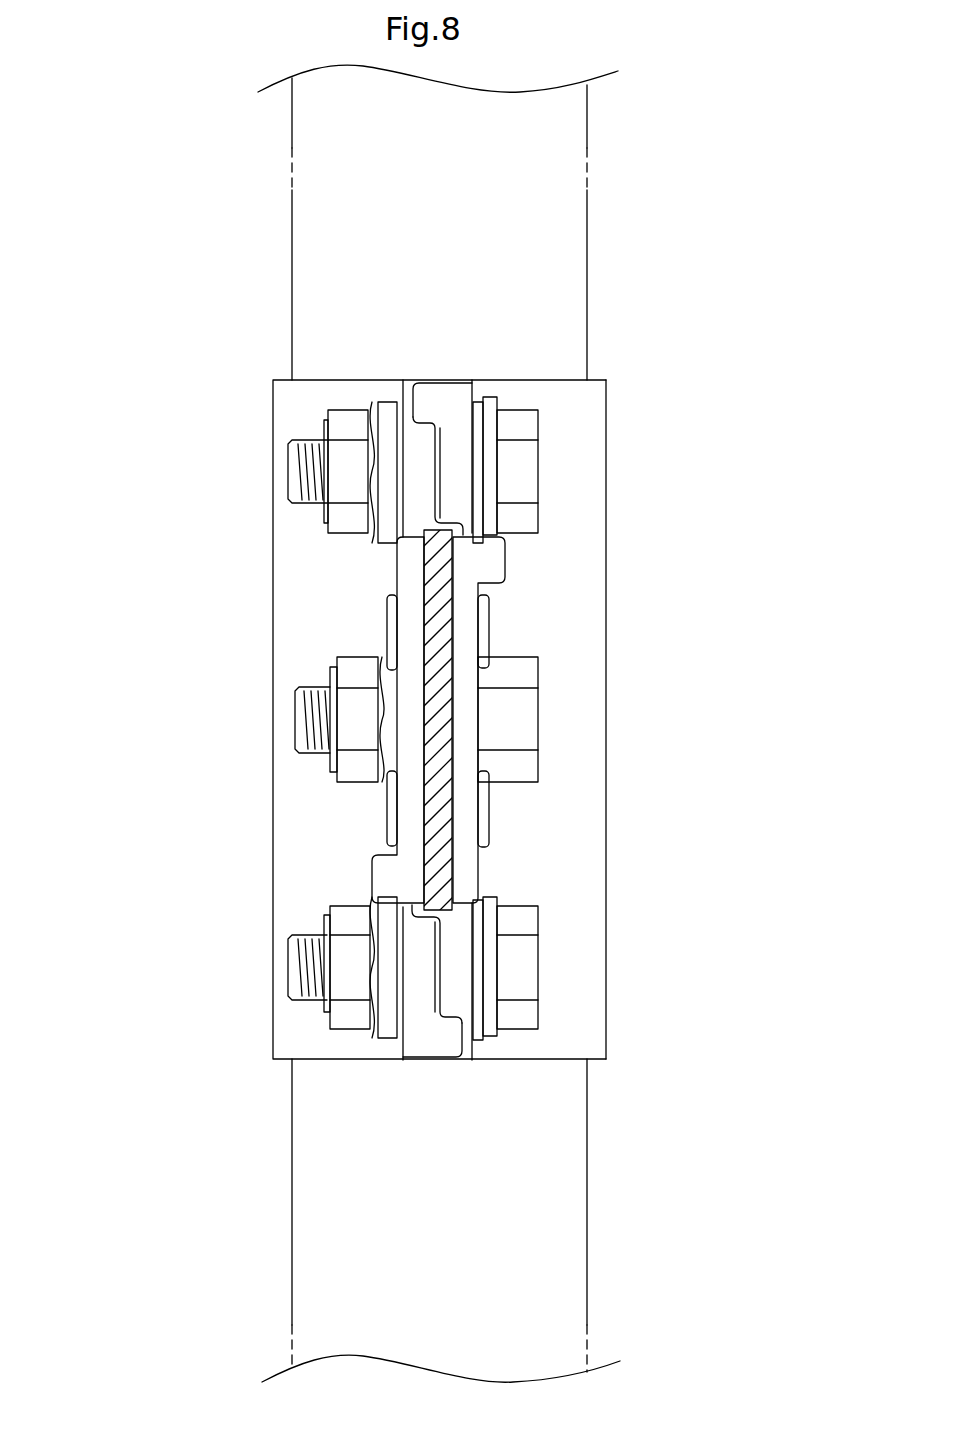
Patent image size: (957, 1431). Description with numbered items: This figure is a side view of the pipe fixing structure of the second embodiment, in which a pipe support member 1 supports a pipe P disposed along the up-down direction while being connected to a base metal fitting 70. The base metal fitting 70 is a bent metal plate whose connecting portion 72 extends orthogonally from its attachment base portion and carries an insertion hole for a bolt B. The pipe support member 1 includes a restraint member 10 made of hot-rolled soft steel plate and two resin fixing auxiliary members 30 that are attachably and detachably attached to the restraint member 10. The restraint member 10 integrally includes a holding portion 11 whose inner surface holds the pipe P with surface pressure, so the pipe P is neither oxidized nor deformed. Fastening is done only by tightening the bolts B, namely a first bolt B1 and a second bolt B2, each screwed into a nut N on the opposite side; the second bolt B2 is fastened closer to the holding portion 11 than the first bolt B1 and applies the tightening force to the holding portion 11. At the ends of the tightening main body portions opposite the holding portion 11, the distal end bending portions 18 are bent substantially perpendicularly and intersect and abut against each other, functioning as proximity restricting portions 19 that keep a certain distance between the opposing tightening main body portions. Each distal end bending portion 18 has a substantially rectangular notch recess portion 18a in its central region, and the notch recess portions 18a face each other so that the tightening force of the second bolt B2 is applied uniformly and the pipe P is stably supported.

The pipe P is at (291, 229).
The pipe support member 1 is at (175, 465).
The restraint member 10 is at (632, 386).
The holding portion 11 is at (578, 625).
The distal end bending portion 18 is at (445, 395).
The proximity restricting portion 19 is at (437, 720).
The notch recess portion 18a is at (435, 960).
The fixing auxiliary member 30 is at (383, 563).
The connecting portion 72 is at (435, 623).
The base metal fitting 70 is at (440, 730).
The nut N is at (337, 428).
The first bolt B1 is at (525, 718).
The second bolt B2 is at (525, 473).
The bolt B is at (433, 718).